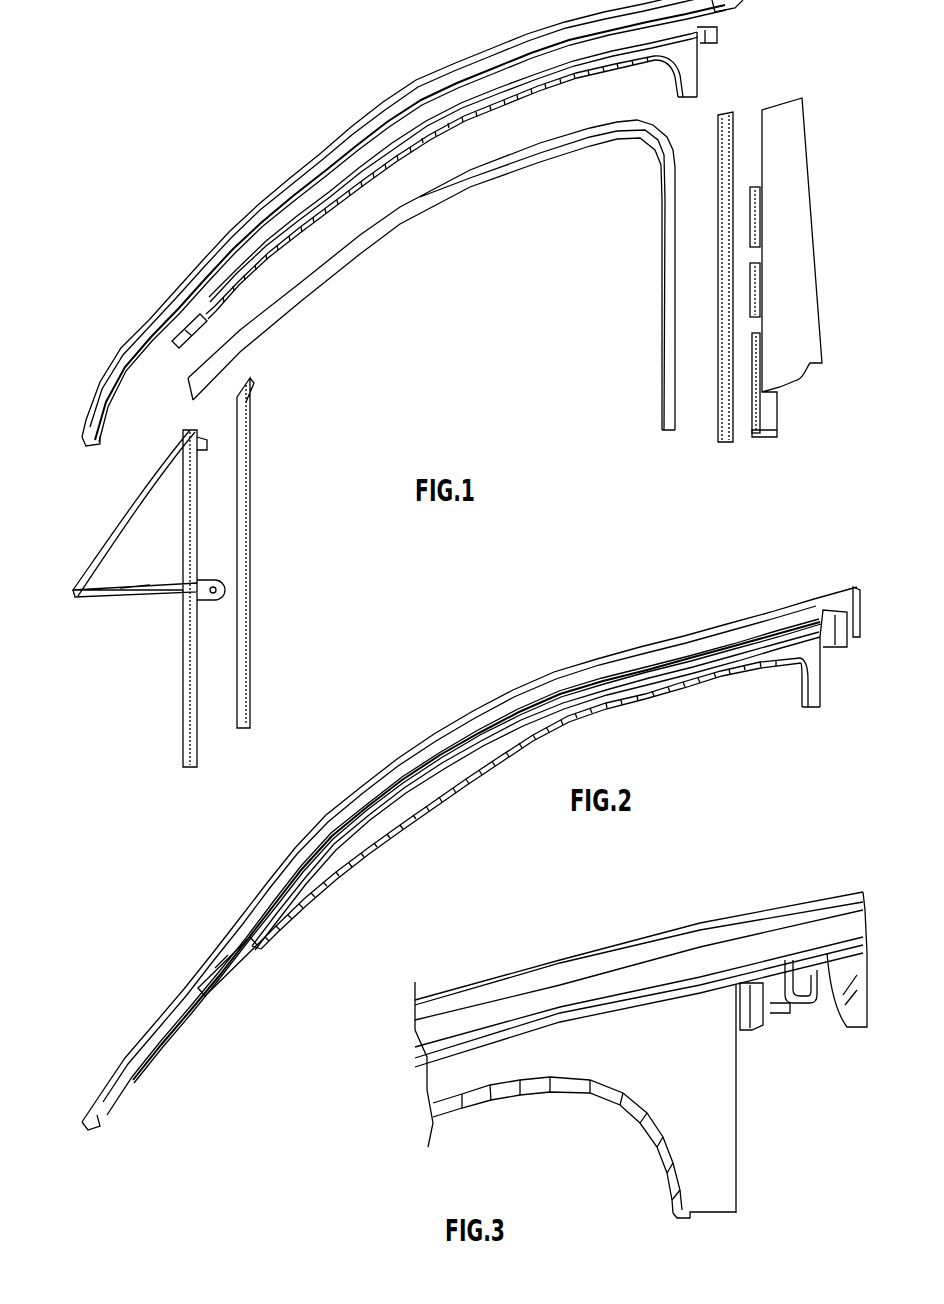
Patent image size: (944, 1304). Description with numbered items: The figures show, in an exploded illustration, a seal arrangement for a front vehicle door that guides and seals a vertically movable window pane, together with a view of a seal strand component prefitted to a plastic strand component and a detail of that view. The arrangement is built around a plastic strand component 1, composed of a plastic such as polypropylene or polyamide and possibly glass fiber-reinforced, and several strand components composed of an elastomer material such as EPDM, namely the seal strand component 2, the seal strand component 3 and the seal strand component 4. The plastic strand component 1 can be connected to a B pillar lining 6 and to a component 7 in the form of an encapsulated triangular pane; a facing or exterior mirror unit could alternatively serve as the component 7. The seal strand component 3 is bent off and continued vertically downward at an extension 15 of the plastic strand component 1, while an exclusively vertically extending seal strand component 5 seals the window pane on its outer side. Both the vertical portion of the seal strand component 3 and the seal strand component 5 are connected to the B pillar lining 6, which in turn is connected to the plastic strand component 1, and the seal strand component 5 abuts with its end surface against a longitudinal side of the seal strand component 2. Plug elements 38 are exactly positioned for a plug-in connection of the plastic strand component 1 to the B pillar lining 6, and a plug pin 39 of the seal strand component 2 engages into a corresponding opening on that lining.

In FIG. 1, the plastic strand component 1 is at (572, 70).
In FIG. 2, the plastic strand component 1 is at (295, 897).
In FIG. 3, the plastic strand component 1 is at (485, 1073).
In FIG. 1, the seal strand component 2 is at (280, 182).
In FIG. 2, the seal strand component 2 is at (148, 1000).
In FIG. 3, the seal strand component 2 is at (745, 930).
In FIG. 1, the seal strand component 3 is at (338, 258).
In FIG. 1, the seal strand component 4 is at (255, 528).
In FIG. 1, the seal strand component 5 is at (717, 430).
In FIG. 1, the B pillar lining 6 is at (790, 207).
In FIG. 1, the component in the form of an encapsulated triangular pane 7 is at (90, 547).
In FIG. 1, the extension 15 is at (690, 73).
In FIG. 2, the extension 15 is at (807, 687).
In FIG. 3, the extension 15 is at (710, 1150).
In FIG. 3, the plug elements 38 is at (780, 1023).
In FIG. 3, the plug pin 39 is at (847, 1033).